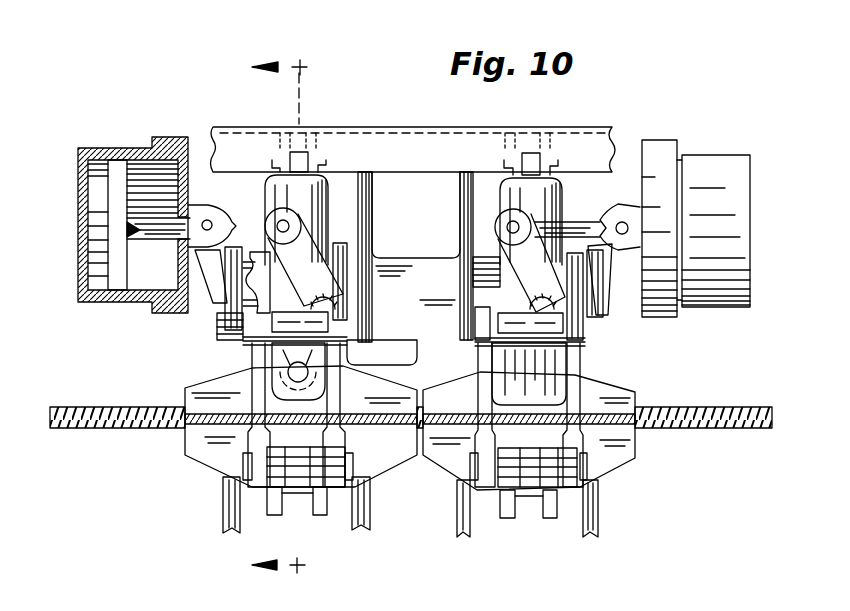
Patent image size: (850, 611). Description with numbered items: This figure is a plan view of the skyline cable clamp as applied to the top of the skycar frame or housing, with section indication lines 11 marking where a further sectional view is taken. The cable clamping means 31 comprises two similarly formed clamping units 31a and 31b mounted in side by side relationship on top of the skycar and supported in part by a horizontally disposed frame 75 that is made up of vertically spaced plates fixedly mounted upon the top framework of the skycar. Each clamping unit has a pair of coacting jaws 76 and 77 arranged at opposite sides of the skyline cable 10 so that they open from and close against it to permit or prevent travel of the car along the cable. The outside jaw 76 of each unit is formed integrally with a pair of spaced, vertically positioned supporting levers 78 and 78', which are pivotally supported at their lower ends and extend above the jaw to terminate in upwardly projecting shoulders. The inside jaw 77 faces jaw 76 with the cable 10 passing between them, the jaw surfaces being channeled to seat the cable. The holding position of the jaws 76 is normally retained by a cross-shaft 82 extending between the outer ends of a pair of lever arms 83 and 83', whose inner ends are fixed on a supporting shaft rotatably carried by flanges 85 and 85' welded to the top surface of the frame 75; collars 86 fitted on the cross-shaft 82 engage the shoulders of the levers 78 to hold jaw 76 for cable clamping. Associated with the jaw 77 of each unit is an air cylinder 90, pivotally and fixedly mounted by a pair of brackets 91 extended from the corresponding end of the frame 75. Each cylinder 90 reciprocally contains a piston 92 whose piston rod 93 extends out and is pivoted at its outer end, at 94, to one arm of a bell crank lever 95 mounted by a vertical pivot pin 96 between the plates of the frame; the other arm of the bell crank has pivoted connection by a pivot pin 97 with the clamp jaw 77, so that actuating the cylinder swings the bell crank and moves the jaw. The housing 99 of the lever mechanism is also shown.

The skyline cable 10 is at (86, 407).
The section line 11 is at (284, 315).
The cable clamping means 31 is at (589, 128).
The clamping unit 31a is at (228, 352).
The clamping unit 31b is at (617, 362).
The horizontally disposed frame 75 is at (405, 258).
The outside jaw 76 is at (200, 445).
The inside jaw 77 is at (373, 383).
The supporting lever 78 is at (350, 523).
The supporting lever 78' is at (423, 526).
The cross-shaft 82 is at (348, 463).
The lever arm 83 is at (388, 415).
The lever arm 83' is at (513, 397).
The flange 85 is at (211, 294).
The flange 85' is at (464, 295).
The collar 86 is at (248, 484).
The air cylinder 90 is at (125, 149).
The bracket 91 is at (225, 232).
The piston 92 is at (128, 187).
The piston rod 93 is at (190, 210).
The pivot 94 is at (290, 226).
The bell crank lever 95 is at (320, 265).
The vertical pivot pin 96 is at (330, 305).
The pivot pin 97 is at (290, 370).
The lever housing 99 is at (320, 195).